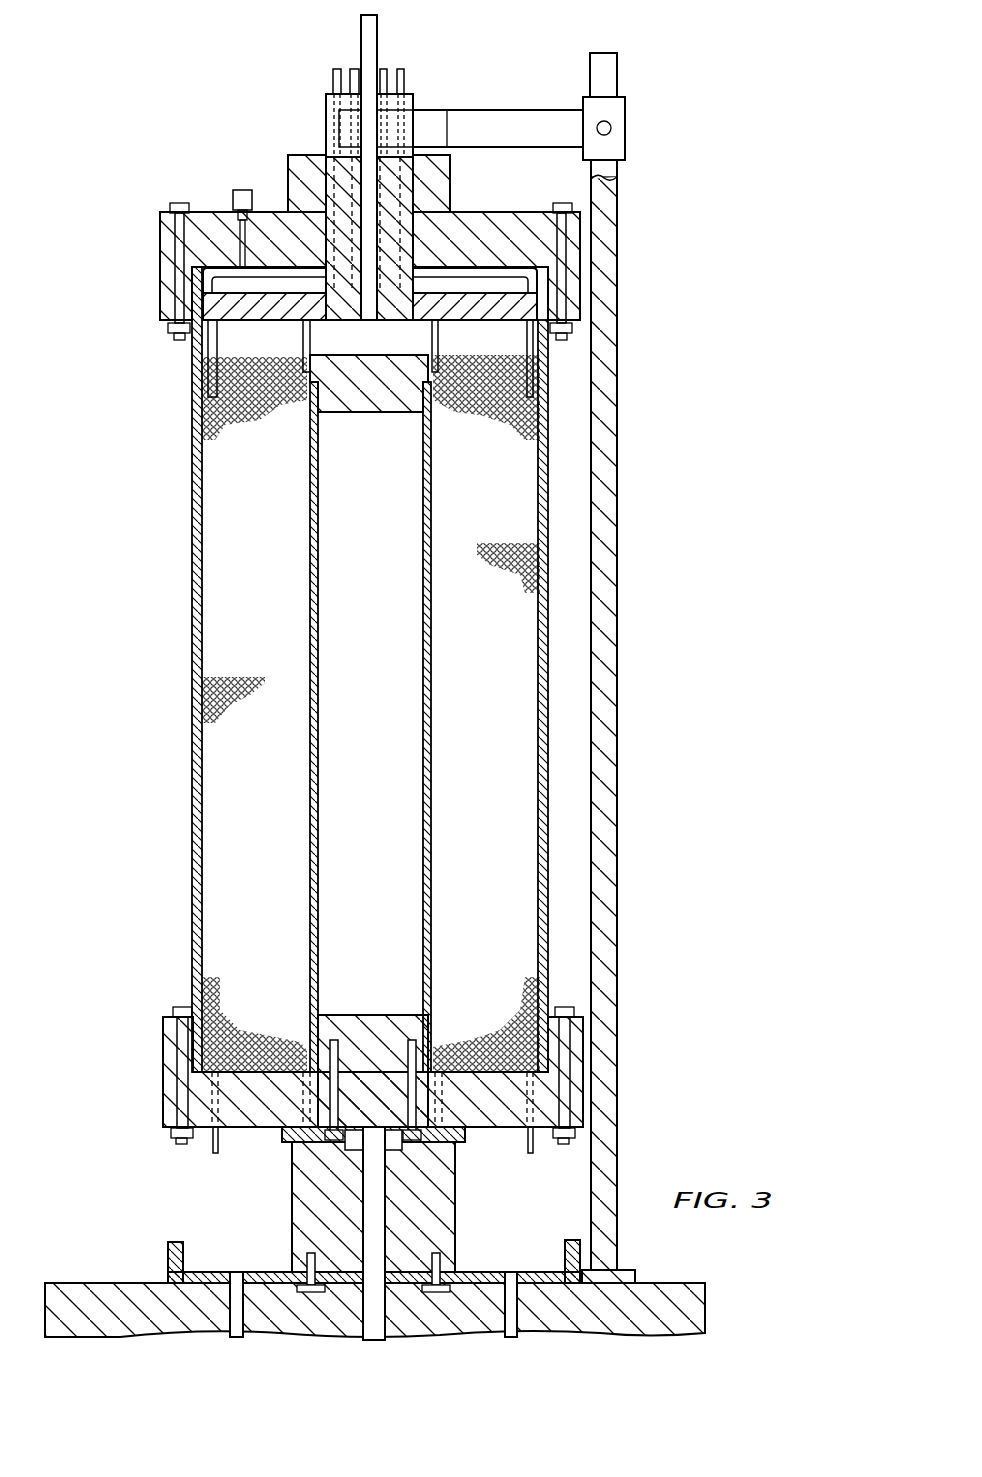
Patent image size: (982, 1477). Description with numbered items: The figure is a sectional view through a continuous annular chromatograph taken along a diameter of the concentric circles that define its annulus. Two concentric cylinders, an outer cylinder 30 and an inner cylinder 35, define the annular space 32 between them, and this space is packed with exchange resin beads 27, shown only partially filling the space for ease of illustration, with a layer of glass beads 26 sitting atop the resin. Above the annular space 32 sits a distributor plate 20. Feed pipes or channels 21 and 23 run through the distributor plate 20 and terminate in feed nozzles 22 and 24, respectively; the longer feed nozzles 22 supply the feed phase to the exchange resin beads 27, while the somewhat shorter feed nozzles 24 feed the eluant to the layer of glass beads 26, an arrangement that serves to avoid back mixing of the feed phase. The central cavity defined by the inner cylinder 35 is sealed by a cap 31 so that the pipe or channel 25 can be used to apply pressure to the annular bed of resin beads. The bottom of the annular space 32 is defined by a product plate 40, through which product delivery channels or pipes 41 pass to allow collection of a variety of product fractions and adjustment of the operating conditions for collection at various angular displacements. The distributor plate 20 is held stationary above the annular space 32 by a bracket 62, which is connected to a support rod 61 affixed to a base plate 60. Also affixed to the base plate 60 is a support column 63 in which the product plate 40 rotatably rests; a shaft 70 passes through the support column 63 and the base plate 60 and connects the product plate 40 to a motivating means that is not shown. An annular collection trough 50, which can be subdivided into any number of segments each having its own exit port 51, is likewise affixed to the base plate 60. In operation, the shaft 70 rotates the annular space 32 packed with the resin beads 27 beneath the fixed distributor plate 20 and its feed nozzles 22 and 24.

The distributor plate 20 is at (326, 127).
The feed pipe 21 is at (350, 68).
The feed pipe 23 is at (405, 75).
The pipe 25 is at (380, 23).
The bracket 62 is at (497, 110).
The support rod 61 is at (620, 650).
The feed nozzle 24 is at (583, 350).
The feed nozzle 22 is at (192, 352).
The glass beads 26 is at (237, 357).
The exchange resin beads 27 is at (517, 433).
The cap 31 is at (380, 403).
The annular space 32 is at (240, 510).
The outer cylinder 30 is at (192, 777).
The inner cylinder 35 is at (318, 707).
The product plate 40 is at (163, 1108).
The product delivery channel 41 is at (222, 1133).
The support column 63 is at (458, 1193).
The annular collection trough 50 is at (168, 1260).
The exit port 51 is at (240, 1313).
The shaft 70 is at (378, 1303).
The base plate 60 is at (707, 1313).